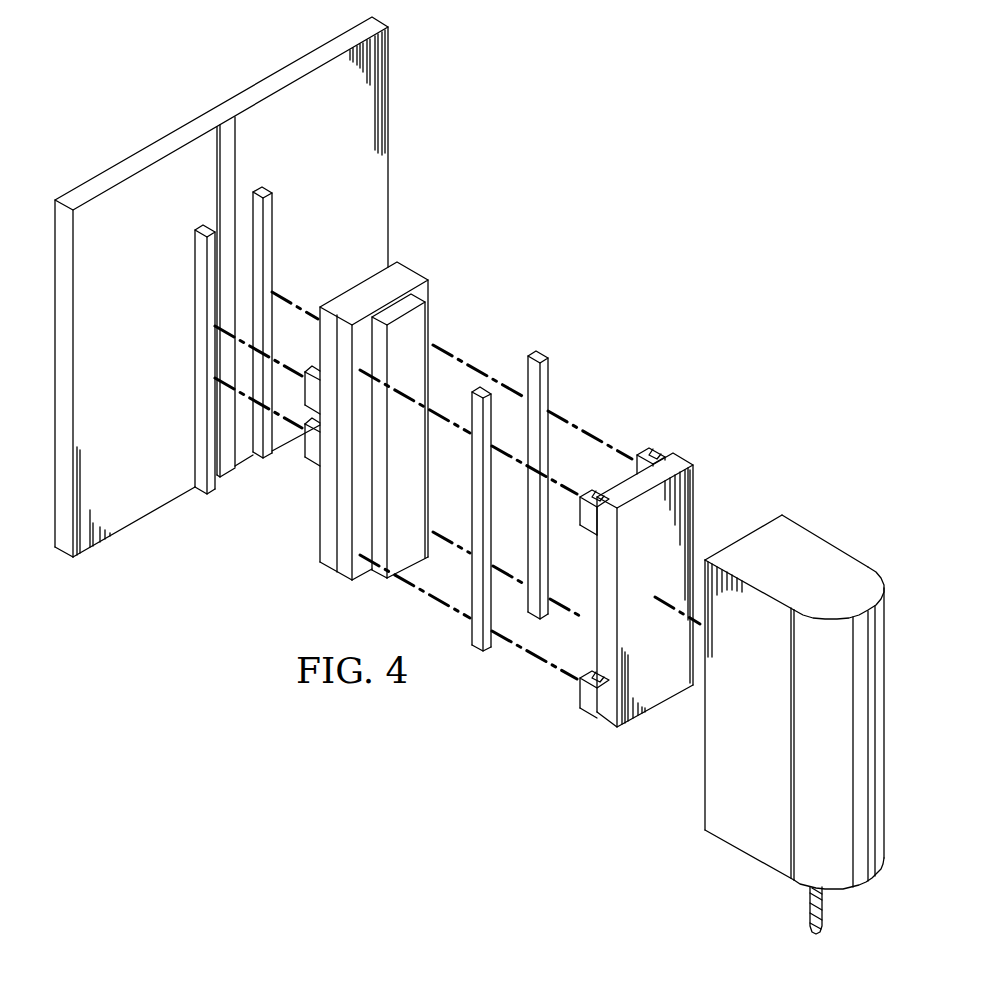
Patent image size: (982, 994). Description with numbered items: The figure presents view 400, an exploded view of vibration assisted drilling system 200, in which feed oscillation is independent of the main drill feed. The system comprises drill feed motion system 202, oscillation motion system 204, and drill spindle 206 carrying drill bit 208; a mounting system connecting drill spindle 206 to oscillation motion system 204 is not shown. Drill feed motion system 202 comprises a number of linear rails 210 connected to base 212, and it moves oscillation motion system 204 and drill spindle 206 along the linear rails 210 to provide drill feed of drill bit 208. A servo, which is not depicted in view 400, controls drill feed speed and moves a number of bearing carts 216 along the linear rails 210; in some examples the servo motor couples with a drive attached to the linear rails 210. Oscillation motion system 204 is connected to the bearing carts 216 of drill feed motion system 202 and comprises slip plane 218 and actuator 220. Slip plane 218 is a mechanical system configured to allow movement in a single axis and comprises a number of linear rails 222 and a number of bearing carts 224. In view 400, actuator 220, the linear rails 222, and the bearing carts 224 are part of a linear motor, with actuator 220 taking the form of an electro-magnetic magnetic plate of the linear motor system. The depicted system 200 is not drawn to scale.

The view 400 is at (773, 201).
The vibration assisted drilling system 200 is at (634, 256).
The drill feed motion system 202 is at (274, 172).
The oscillation motion system 204 is at (423, 255).
The drill spindle 206 is at (884, 712).
The drill bit 208 is at (824, 913).
The number of linear rails 210 is at (202, 277).
The base 212 is at (378, 172).
The number of bearing carts 216 is at (328, 518).
The slip plane 218 is at (360, 262).
The actuator 220 is at (418, 322).
The number of linear rails 222 is at (549, 382).
The number of bearing carts 224 is at (607, 712).